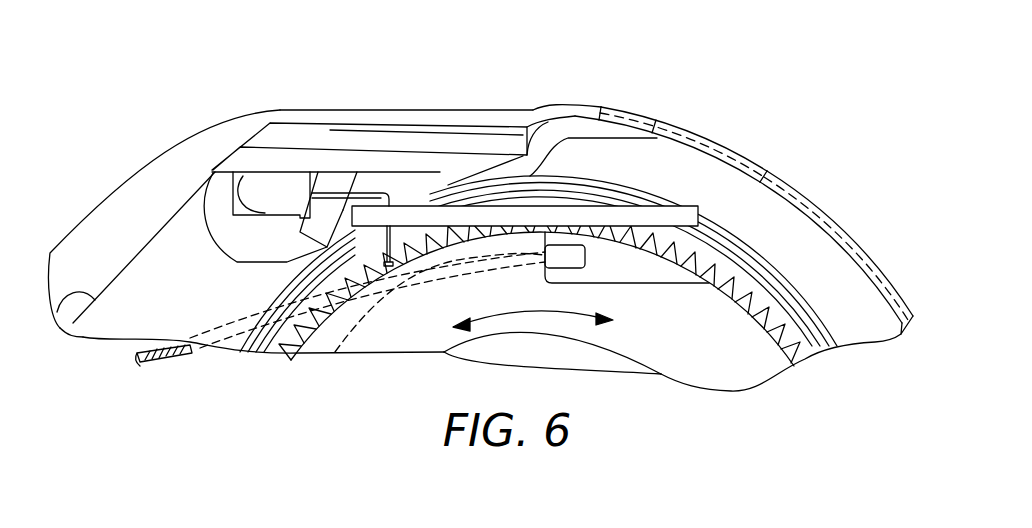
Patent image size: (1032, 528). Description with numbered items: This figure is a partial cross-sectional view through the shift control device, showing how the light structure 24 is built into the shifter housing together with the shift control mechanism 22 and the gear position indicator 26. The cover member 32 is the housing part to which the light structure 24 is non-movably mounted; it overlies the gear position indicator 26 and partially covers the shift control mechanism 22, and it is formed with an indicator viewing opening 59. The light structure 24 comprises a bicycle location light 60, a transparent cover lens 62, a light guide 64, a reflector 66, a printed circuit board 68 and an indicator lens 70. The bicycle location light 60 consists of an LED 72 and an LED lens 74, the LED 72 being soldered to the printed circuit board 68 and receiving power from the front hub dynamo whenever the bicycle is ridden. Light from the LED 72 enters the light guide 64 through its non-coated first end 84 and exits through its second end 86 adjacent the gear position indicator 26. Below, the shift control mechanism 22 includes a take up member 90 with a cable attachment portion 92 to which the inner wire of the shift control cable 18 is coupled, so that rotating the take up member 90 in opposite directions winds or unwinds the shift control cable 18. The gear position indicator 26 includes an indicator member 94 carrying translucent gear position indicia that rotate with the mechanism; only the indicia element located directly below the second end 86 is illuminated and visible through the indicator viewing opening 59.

The shift control cable 18 is at (168, 362).
The shift control mechanism 22 is at (755, 405).
The light structure 24 is at (249, 92).
The gear position indicator 26 is at (820, 372).
The cover member 32 is at (893, 265).
The indicator viewing opening 59 is at (766, 167).
The bicycle location light 60 is at (133, 277).
The transparent cover lens 62 is at (127, 170).
The light guide 64 is at (547, 143).
The reflector 66 is at (56, 318).
The printed circuit board 68 is at (684, 200).
The indicator lens 70 is at (818, 200).
The LED 72 is at (263, 203).
The LED lens 74 is at (222, 216).
The first end 84 is at (253, 174).
The second end 86 is at (690, 140).
The take up member 90 is at (688, 351).
The cable attachment portion 92 is at (545, 258).
The indicator member 94 is at (796, 357).